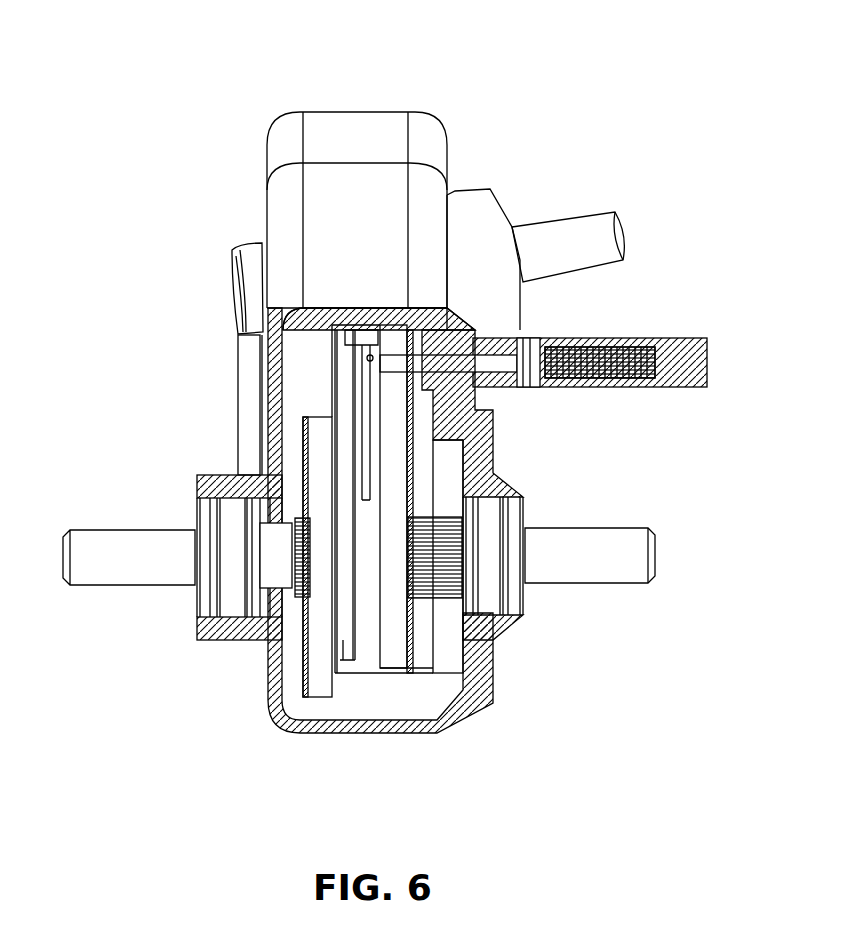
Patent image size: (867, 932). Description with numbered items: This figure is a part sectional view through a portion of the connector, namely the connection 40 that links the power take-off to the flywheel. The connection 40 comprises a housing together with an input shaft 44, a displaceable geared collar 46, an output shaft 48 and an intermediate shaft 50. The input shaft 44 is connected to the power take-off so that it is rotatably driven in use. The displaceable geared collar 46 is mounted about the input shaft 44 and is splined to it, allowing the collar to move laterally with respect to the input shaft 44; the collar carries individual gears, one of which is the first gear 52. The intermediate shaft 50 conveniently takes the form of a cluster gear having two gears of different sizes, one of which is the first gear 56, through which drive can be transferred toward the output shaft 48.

The connection 40 is at (347, 100).
The input shaft 44 is at (597, 535).
The displaceable geared collar 46 is at (322, 727).
The output shaft 48 is at (573, 212).
The intermediate shaft 50 is at (287, 393).
The first gear 52 is at (317, 668).
The first gear 56 is at (395, 477).